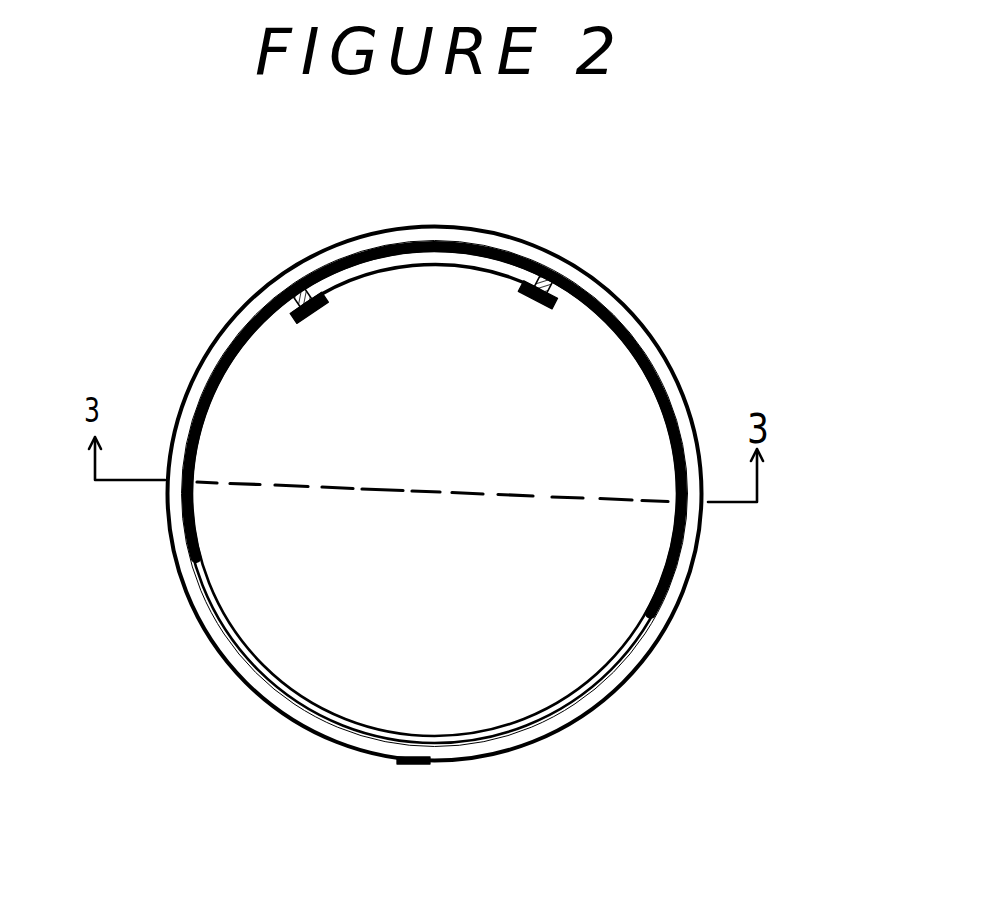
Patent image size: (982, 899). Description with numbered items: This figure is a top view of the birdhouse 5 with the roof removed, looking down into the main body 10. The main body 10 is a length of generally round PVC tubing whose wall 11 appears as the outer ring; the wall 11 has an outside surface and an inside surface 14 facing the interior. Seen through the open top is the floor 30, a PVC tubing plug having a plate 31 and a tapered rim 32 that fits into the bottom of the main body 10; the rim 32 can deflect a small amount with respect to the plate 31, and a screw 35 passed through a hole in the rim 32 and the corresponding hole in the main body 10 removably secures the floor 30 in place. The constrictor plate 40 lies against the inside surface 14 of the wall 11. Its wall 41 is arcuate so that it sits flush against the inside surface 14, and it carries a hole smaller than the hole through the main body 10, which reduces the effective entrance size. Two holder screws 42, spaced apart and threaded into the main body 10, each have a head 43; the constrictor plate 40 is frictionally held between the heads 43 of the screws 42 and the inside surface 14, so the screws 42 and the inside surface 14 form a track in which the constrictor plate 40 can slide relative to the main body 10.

The birdhouse 5 is at (142, 683).
The main body 10 is at (627, 675).
The wall 11 is at (683, 601).
The inside surface 14 is at (553, 718).
The floor 30 is at (588, 367).
The plate 31 is at (623, 407).
The rim 32 is at (686, 552).
The screw 35 is at (424, 766).
The constrictor plate 40 is at (537, 250).
The wall 41 is at (484, 248).
The holder screws 42 is at (292, 322).
The heads 43 is at (324, 306).